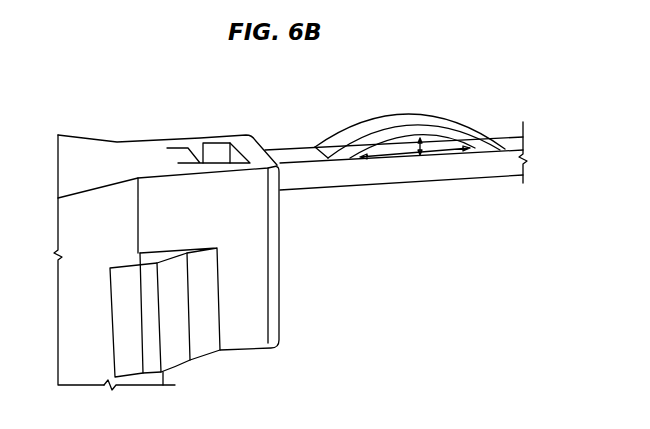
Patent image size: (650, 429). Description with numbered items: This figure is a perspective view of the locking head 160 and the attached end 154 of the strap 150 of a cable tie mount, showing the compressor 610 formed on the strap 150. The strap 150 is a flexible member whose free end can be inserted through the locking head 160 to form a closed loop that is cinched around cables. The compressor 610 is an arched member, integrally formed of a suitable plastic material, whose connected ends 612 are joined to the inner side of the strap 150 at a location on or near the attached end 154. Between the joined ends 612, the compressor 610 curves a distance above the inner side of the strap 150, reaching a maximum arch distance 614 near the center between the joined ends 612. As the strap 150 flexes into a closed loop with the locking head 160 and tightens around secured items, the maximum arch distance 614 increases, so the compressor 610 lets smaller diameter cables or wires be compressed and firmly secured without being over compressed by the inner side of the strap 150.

The strap 150 is at (482, 168).
The attached end 154 is at (268, 154).
The locking head 160 is at (252, 292).
The compressor 610 is at (418, 120).
The connected ends 612 is at (445, 155).
The maximum arch distance 614 is at (382, 147).